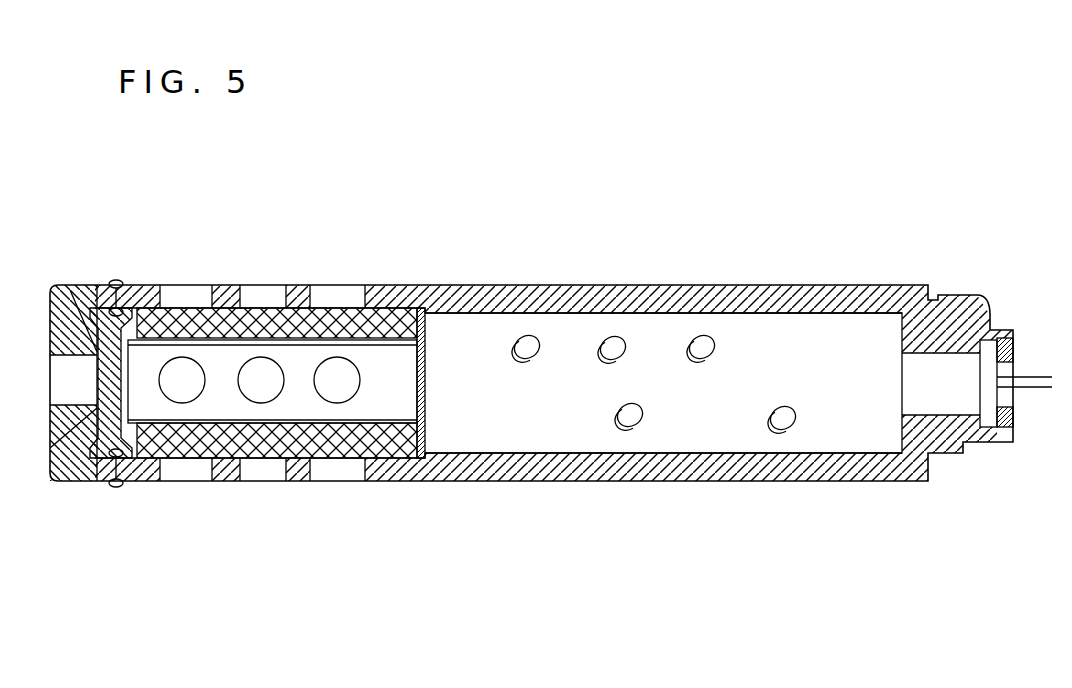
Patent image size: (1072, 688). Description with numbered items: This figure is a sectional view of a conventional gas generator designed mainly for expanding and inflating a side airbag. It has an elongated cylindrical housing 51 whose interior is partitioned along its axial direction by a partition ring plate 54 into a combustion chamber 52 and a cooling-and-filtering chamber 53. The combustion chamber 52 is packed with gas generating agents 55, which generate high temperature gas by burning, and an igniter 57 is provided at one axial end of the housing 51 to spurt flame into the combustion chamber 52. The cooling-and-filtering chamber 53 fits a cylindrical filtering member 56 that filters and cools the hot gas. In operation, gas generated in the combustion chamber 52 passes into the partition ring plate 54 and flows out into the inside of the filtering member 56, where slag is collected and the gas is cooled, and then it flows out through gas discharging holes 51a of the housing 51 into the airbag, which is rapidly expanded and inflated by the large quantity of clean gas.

The housing 51 is at (602, 297).
The gas discharging holes 51a is at (263, 297).
The combustion chamber 52 is at (840, 335).
The cooling-and-filtering chamber 53 is at (403, 410).
The partition ring plate 54 is at (427, 322).
The gas generating agents 55 is at (712, 340).
The filtering member 56 is at (338, 310).
The igniter 57 is at (952, 372).